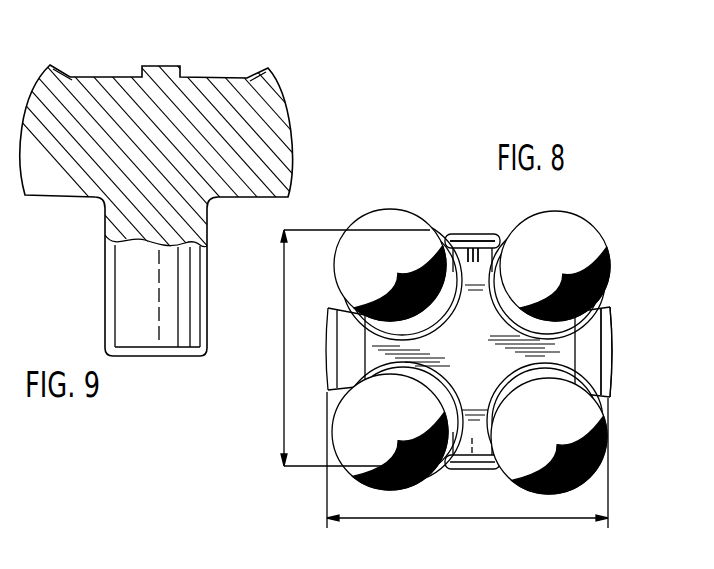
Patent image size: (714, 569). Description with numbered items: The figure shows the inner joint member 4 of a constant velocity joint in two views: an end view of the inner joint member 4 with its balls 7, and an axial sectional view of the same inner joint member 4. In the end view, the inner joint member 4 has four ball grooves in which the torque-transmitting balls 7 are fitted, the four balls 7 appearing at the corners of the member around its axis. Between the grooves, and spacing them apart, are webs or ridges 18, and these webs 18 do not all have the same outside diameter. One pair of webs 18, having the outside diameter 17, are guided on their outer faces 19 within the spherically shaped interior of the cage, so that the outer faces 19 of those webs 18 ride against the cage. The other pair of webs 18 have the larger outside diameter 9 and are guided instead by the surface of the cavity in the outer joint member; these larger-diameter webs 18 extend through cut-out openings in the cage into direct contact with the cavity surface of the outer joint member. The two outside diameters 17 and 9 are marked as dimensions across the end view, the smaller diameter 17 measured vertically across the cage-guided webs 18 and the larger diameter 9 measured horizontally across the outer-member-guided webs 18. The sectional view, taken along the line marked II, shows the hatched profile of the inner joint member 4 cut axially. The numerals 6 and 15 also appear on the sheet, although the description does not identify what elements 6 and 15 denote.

In FIG. 9, the inner joint member 4 is at (213, 105).
In FIG. 8, the inner joint member 4 is at (592, 333).
In FIG. 8, the central housing body 6 is at (528, 327).
In FIG. 8, the torque-transmitting balls 7 is at (571, 226).
In FIG. 8, the larger outside diameter 9 is at (493, 519).
In FIG. 8, the socket element 15 is at (277, 568).
In FIG. 8, the outside diameter 17 is at (286, 346).
In FIG. 8, the webs or ridges 18 is at (481, 257).
In FIG. 8, the outer faces 19 is at (463, 237).
In FIG. 9, the section line II is at (157, 0).